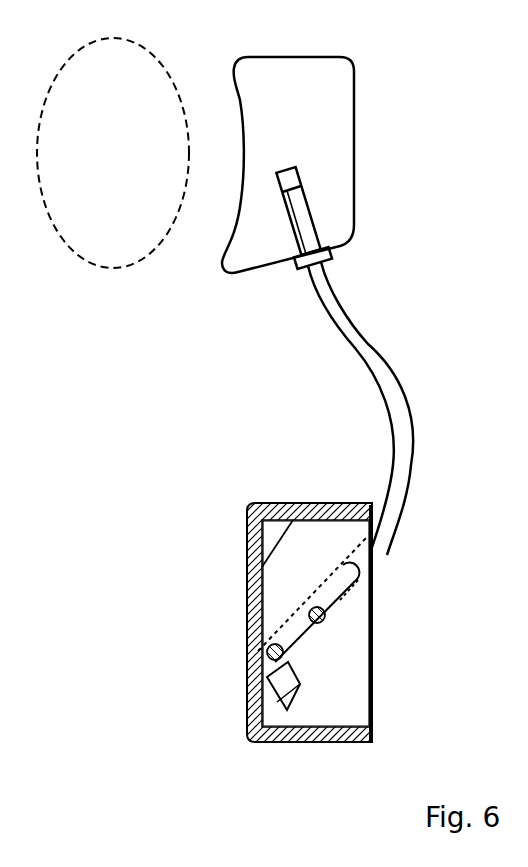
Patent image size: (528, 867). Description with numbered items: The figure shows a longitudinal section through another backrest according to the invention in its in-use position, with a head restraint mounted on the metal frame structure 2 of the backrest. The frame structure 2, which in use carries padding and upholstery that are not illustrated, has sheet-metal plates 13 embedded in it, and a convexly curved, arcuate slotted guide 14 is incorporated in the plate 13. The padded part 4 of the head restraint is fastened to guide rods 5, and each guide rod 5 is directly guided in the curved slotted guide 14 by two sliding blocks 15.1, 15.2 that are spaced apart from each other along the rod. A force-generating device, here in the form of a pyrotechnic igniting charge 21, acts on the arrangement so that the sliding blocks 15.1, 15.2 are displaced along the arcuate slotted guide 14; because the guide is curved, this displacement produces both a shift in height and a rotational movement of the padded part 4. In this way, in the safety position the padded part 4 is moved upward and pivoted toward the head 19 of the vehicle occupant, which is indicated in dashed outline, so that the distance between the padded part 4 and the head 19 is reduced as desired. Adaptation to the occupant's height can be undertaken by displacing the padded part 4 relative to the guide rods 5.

The frame structure 2 is at (308, 742).
The padded part 4 is at (308, 118).
The guide rods 5 is at (403, 439).
The sheet-metal plates 13 is at (333, 707).
The slotted guide 14 is at (352, 568).
The sliding block 15.1 is at (326, 613).
The sliding block 15.2 is at (284, 651).
The head 19 is at (128, 170).
The pyrotechnic igniting charge 21 is at (270, 704).